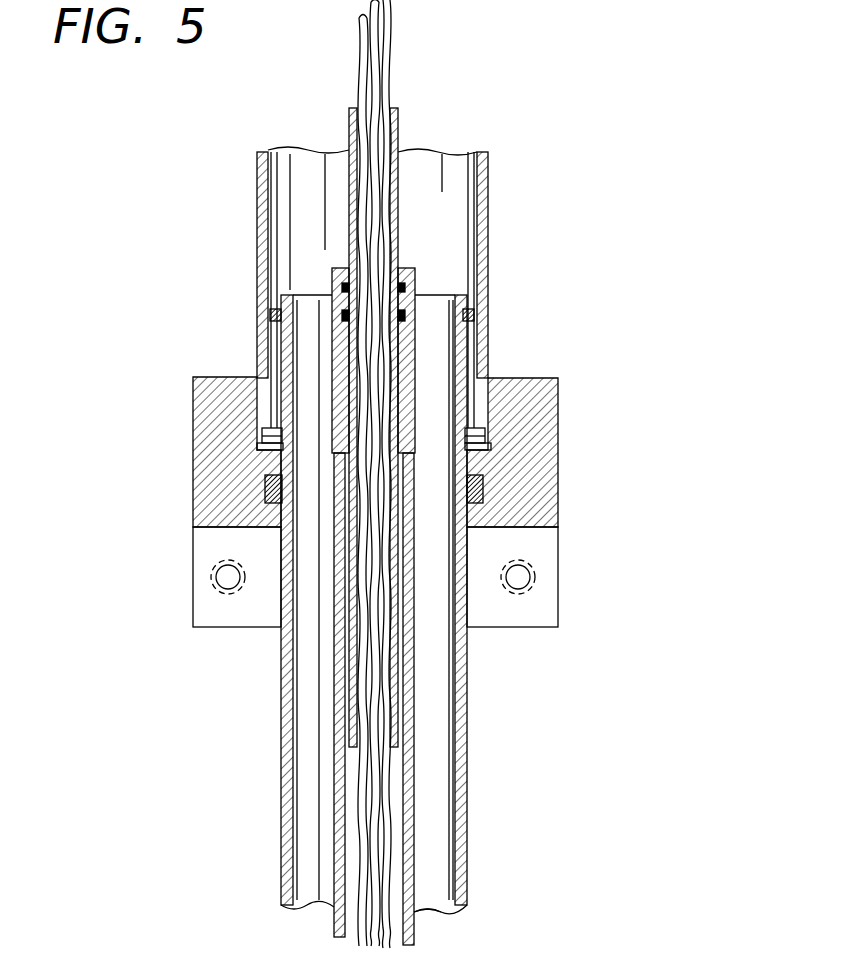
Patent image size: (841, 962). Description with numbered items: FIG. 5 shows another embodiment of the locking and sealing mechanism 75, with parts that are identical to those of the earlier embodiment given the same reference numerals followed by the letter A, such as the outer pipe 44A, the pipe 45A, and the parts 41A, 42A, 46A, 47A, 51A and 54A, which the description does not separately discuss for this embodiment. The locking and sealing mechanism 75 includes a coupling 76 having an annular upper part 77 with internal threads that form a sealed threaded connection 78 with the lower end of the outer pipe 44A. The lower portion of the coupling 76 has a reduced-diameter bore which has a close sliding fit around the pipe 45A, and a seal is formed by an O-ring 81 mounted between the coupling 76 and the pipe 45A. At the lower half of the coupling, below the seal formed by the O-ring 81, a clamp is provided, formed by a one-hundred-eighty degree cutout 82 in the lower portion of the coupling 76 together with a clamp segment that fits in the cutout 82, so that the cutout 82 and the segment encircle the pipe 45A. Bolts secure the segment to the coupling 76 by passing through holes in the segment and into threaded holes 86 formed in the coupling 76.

The tube assembly 41A is at (359, 294).
The annular passage 42A is at (326, 752).
The outer pipe 44A is at (490, 167).
The pipe 45A is at (376, 616).
The central tube 46A is at (398, 117).
The lower outlet 47A is at (432, 925).
The conduit 51A is at (352, 940).
The collar 54A is at (424, 271).
The locking and sealing mechanism 75 is at (407, 506).
The coupling 76 is at (371, 506).
The annular upper part 77 is at (522, 387).
The sealed threaded connection 78 is at (490, 375).
The O-ring 81 is at (480, 496).
The cutout 82 is at (535, 545).
The threaded holes 86 is at (218, 578).